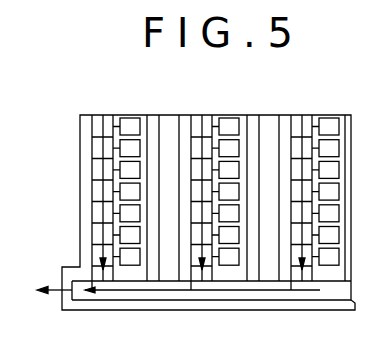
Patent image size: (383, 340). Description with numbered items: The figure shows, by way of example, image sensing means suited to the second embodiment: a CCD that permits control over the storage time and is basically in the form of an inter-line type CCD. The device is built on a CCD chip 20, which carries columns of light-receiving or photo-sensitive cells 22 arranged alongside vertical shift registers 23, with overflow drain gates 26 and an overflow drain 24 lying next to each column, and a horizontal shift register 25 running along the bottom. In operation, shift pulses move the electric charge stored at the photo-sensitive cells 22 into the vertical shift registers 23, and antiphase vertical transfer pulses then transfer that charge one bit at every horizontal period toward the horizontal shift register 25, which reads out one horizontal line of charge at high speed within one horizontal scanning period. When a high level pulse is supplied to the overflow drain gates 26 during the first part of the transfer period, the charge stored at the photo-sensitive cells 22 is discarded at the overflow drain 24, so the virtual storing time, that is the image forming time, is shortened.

The CCD chip 20 is at (79, 205).
The photo-sensitive cells 22 is at (129, 123).
The vertical shift registers 23 is at (104, 124).
The overflow drain 24 is at (172, 117).
The horizontal shift register 25 is at (112, 295).
The overflow drain gates 26 is at (152, 117).